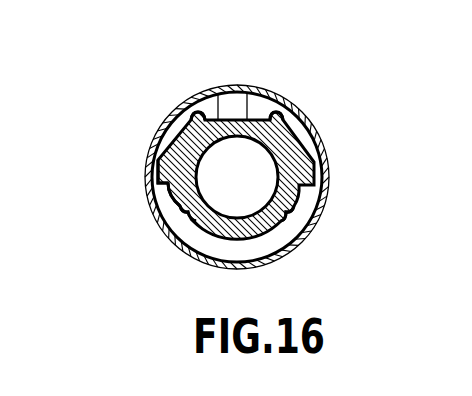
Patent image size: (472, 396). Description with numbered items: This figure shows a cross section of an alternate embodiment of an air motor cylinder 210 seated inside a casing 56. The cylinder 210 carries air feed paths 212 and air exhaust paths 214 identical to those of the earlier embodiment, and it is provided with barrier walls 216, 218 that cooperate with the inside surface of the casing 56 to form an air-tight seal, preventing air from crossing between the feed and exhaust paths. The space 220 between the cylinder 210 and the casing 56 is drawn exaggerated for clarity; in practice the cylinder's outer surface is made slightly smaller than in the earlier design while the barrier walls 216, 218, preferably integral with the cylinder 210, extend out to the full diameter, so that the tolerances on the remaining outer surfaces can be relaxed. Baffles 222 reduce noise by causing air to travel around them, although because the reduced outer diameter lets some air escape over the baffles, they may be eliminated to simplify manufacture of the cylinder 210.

The space 220 is at (219, 101).
The barrier wall 216 is at (324, 161).
The cylinder 210 is at (320, 192).
The air exhaust paths 214 is at (248, 98).
The baffles 222 is at (225, 106).
The barrier wall 218 is at (158, 165).
The casing 56 is at (162, 226).
The air feed paths 212 is at (194, 214).